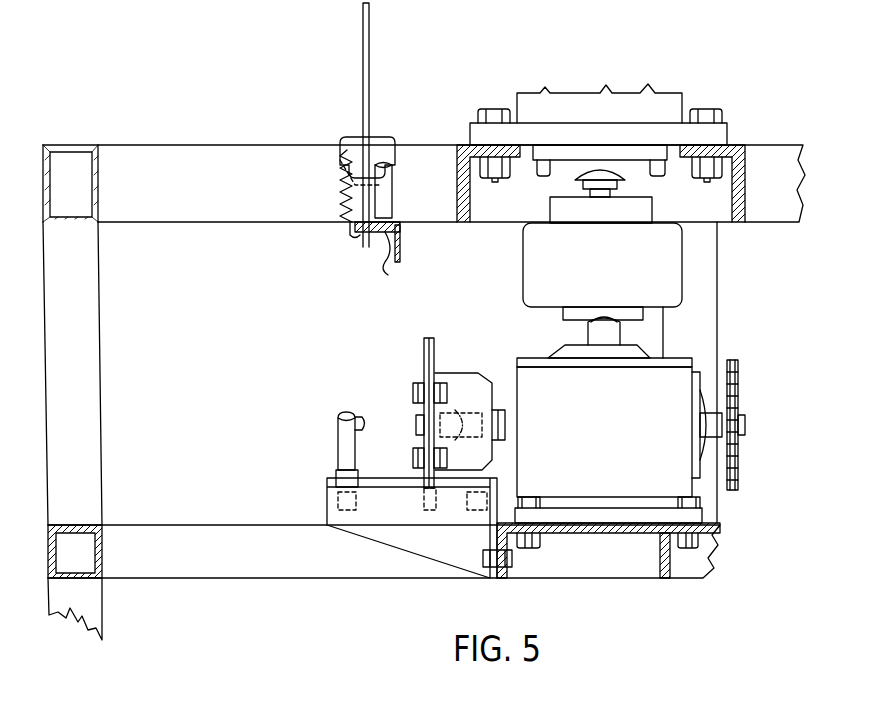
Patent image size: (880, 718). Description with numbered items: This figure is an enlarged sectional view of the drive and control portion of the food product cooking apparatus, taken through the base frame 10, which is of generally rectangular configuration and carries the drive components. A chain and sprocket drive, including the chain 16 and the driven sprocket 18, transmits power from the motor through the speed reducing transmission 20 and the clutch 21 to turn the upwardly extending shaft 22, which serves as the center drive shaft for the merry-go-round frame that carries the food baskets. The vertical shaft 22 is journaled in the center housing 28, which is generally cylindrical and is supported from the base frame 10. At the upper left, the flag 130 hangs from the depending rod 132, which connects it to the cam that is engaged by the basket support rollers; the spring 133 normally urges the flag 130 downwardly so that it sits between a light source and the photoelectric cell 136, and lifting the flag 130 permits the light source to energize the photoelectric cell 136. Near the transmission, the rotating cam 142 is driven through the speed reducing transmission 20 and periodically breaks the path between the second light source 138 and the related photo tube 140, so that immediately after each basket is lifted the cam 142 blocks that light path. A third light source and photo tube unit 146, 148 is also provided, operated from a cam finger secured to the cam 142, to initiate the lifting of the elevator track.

The base frame 10 is at (210, 584).
The chain 16 is at (732, 360).
The driven sprocket 18 is at (758, 414).
The speed reducing transmission 20 is at (640, 358).
The clutch 21 is at (672, 302).
The shaft 22 is at (622, 190).
The center housing 28 is at (680, 108).
The flag 130 is at (385, 145).
The depending rod 132 is at (370, 85).
The spring 133 is at (342, 183).
The photoelectric cell 136 is at (390, 205).
The second light source 138 is at (368, 502).
The photo tube 140 is at (482, 508).
The rotating cam 142 is at (424, 350).
The third light source 146 is at (357, 422).
The photo tube 148 is at (476, 405).